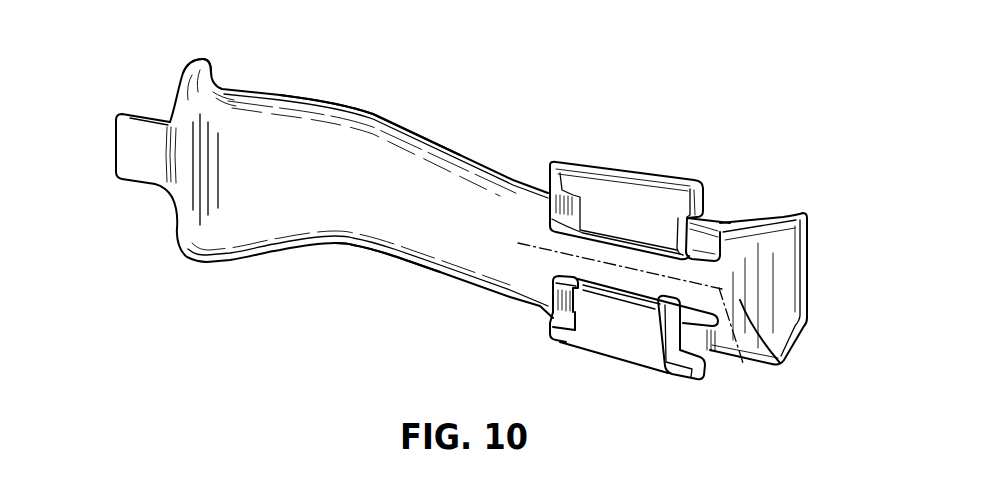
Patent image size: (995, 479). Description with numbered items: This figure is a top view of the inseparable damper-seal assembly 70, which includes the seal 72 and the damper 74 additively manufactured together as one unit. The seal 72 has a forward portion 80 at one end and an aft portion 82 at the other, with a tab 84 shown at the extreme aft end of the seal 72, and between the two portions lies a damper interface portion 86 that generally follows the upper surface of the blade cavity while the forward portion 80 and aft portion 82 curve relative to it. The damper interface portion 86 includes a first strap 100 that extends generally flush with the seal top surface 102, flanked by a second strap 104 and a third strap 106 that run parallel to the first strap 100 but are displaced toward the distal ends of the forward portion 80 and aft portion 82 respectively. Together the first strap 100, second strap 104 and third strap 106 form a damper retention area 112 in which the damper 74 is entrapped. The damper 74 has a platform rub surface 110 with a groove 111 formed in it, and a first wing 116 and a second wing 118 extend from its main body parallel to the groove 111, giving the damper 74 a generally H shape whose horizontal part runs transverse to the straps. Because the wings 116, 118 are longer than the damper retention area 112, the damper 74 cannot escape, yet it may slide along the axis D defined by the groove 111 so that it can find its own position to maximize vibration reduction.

The inseparable damper-seal assembly 70 is at (514, 158).
The seal 72 is at (371, 105).
The damper 74 is at (612, 145).
The forward portion 80 is at (816, 268).
The aft portion 82 is at (163, 86).
The tab 84 is at (133, 149).
The damper interface portion 86 is at (714, 206).
The first strap 100 is at (780, 364).
The seal top surface 102 is at (430, 214).
The second strap 104 is at (562, 306).
The third strap 106 is at (566, 194).
The platform rub surface 110 is at (648, 200).
The groove 111 is at (660, 305).
The damper retention area 112 is at (700, 251).
The first wing 116 is at (612, 362).
The second wing 118 is at (628, 172).
The axis D is at (737, 339).